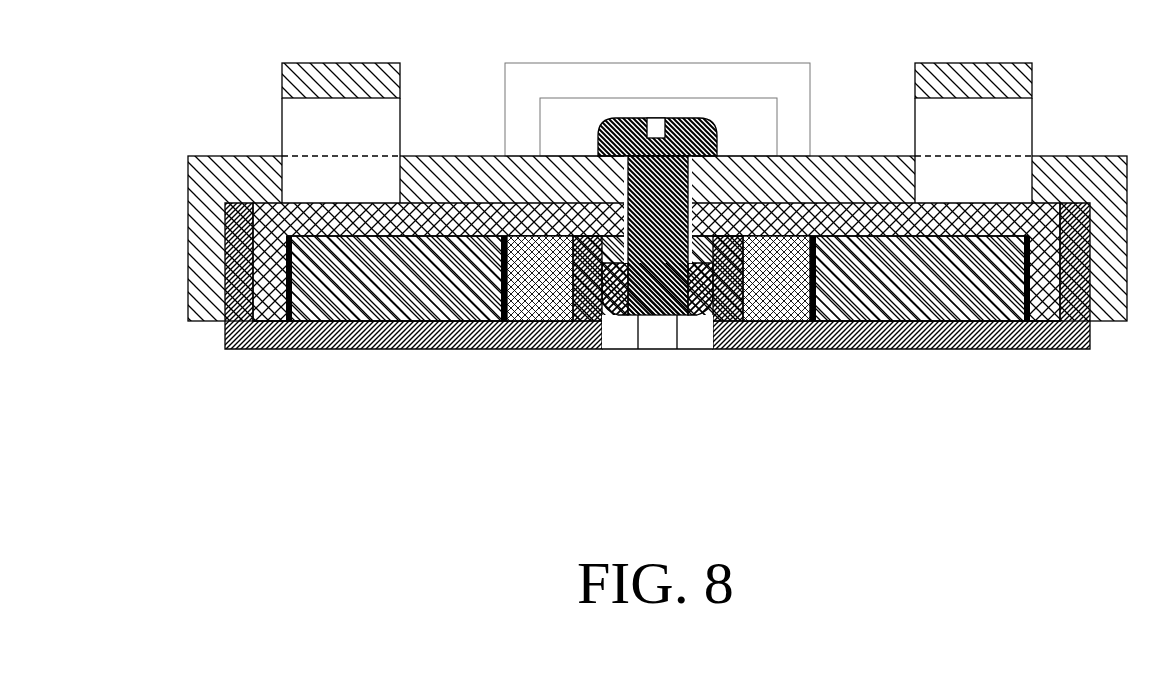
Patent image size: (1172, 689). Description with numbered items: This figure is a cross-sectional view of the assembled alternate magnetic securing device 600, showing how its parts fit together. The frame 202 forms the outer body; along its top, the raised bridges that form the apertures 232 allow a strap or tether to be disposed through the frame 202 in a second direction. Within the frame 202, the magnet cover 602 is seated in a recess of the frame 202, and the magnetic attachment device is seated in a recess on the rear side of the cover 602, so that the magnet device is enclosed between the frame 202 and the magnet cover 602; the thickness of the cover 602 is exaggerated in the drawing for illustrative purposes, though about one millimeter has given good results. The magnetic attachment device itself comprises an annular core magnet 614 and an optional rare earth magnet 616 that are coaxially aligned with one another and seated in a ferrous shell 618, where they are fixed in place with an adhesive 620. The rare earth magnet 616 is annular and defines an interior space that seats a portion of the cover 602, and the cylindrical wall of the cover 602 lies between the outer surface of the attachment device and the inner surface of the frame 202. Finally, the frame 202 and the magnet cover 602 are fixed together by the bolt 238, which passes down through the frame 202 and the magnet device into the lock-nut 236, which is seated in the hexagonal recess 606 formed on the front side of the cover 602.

The frame 202 is at (208, 176).
The apertures 232 is at (1012, 131).
The lock-nut 236 is at (620, 297).
The bolt 238 is at (697, 128).
The magnetic securing device 600 is at (445, 204).
The magnet cover 602 is at (266, 350).
The hexagonal recess 606 is at (695, 333).
The annular core magnet 614 is at (372, 310).
The rare earth magnet 616 is at (535, 308).
The ferrous shell 618 is at (275, 266).
The adhesive 620 is at (808, 325).